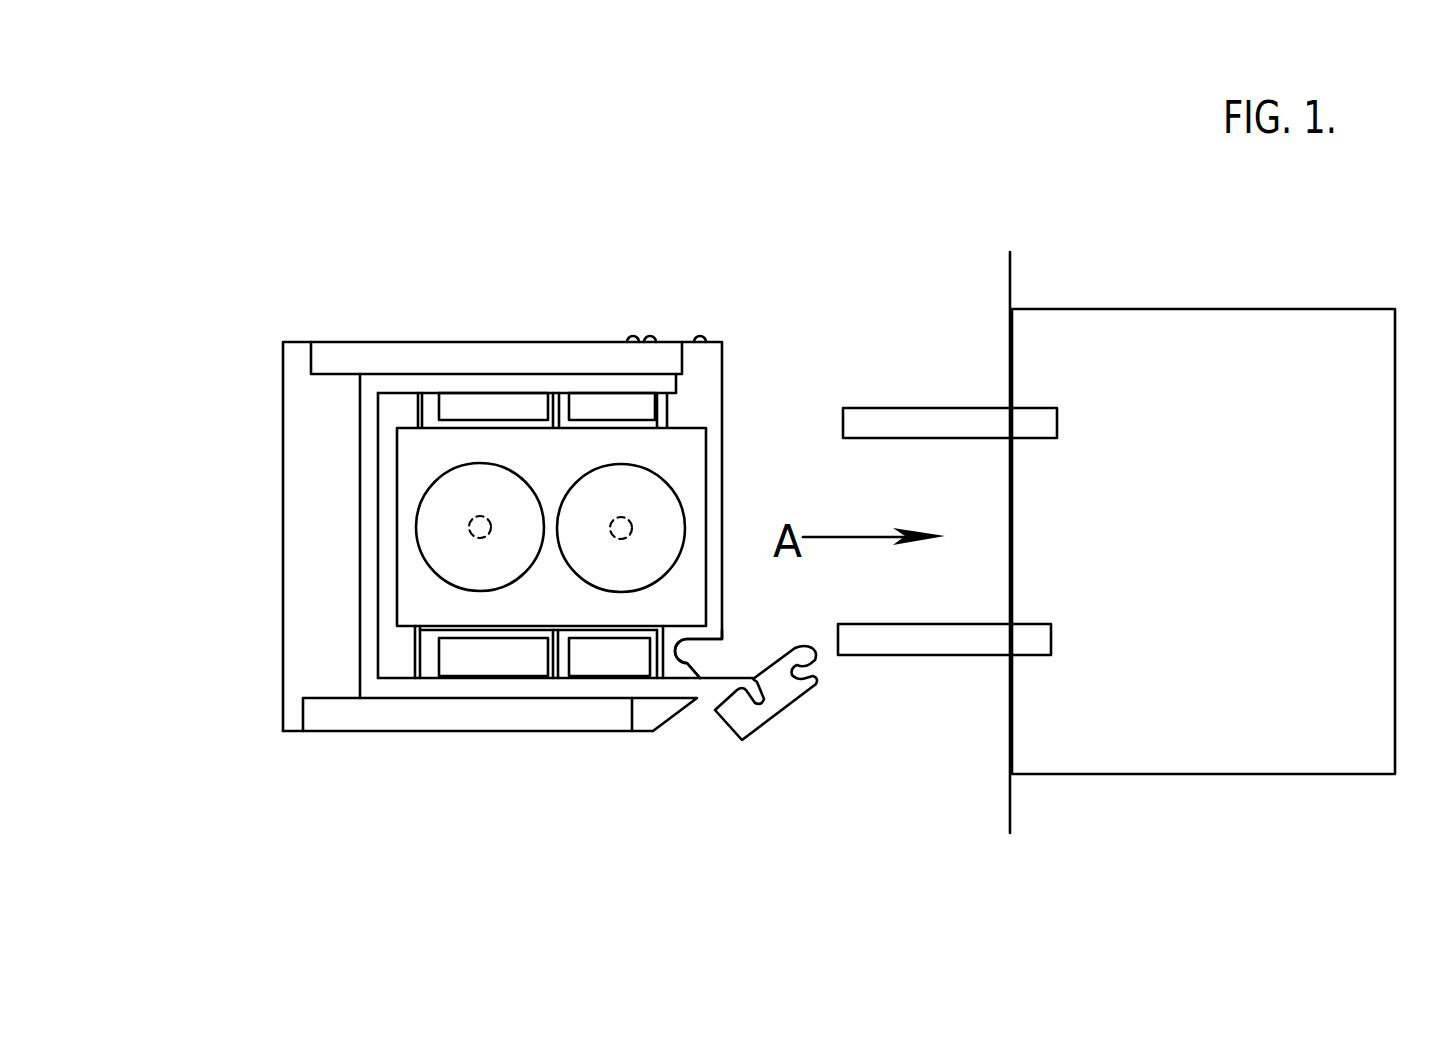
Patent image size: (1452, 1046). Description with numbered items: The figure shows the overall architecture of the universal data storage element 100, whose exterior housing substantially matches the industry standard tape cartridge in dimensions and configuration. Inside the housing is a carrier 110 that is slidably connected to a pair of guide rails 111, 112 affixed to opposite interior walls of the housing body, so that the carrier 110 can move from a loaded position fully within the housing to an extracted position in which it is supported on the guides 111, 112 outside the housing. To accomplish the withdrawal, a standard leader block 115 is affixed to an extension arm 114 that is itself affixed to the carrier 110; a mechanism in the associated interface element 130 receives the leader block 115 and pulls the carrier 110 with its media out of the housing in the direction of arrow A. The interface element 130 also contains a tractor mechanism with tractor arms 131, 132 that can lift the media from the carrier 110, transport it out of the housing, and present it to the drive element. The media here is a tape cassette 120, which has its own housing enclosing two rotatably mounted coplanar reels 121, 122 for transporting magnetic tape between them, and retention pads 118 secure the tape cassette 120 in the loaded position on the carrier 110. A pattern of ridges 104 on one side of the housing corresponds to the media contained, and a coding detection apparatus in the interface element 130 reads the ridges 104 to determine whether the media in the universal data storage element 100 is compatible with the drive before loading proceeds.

The universal data storage element 100 is at (330, 334).
The pattern of ridges 104 is at (735, 327).
The carrier 110 is at (360, 573).
The guide rail 111 is at (408, 363).
The guide rail 112 is at (440, 715).
The extension arm 114 is at (703, 688).
The leader block 115 is at (778, 695).
The retention pads 118 is at (598, 660).
The tape cassette 120 is at (692, 467).
The reel 121 is at (478, 478).
The reel 122 is at (620, 483).
The interface element 130 is at (1215, 305).
The tractor arm 131 is at (945, 422).
The tractor arm 132 is at (900, 640).